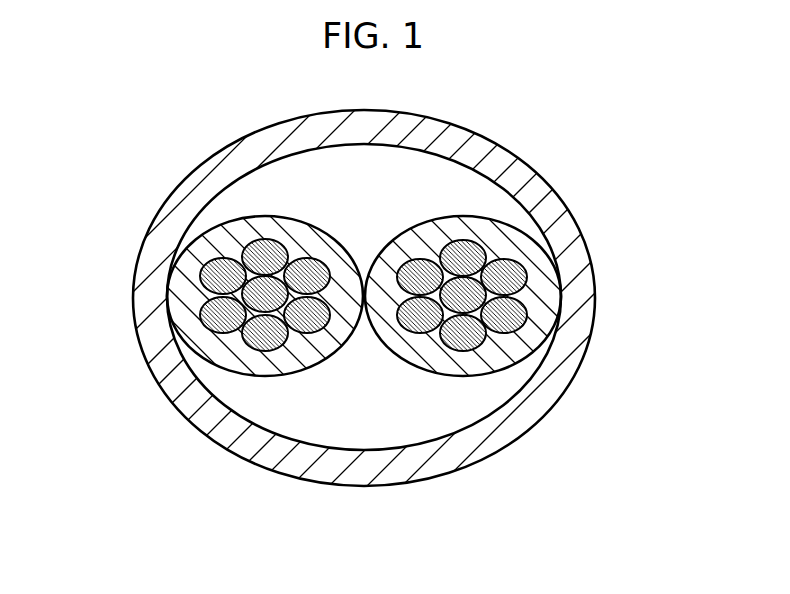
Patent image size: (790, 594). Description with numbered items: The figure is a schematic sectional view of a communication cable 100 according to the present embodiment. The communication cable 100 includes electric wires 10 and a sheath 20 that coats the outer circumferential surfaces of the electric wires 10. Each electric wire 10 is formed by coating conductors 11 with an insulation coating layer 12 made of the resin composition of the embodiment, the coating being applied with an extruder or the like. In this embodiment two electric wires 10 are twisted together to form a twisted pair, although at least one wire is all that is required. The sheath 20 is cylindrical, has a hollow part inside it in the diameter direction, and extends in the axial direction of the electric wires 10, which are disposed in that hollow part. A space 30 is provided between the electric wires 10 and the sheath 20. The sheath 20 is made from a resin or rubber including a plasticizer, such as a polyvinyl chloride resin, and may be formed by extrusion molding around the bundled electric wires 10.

The communication cable 100 is at (395, 295).
The sheath 20 is at (577, 245).
The space 30 is at (372, 167).
The electric wire 10 is at (357, 308).
The conductor 11 is at (208, 285).
The insulation coating layer 12 is at (290, 365).